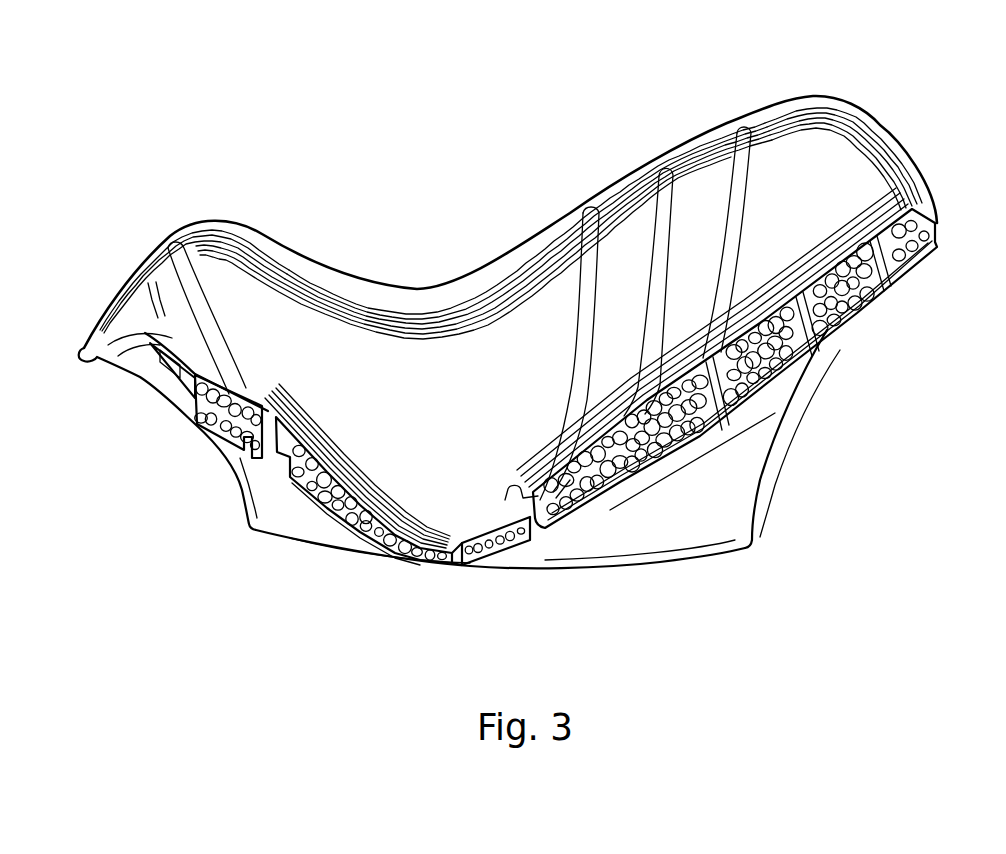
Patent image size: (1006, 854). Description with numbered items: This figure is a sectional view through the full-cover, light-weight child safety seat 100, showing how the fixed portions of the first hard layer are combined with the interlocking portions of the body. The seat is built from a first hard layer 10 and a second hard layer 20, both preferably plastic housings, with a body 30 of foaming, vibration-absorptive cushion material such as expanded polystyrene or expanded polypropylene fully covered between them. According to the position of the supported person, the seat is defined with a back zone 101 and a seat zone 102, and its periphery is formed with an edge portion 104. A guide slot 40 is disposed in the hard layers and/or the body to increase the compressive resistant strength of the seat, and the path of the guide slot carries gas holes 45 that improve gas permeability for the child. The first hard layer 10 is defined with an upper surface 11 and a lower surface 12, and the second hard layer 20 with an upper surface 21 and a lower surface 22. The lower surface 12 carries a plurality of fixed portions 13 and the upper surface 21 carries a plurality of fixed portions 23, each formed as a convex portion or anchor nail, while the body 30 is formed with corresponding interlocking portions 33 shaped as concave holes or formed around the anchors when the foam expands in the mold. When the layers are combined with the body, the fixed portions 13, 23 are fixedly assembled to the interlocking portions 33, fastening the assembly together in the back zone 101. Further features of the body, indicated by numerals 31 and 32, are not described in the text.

The child safety seat 100 is at (458, 165).
The back zone 101 is at (856, 158).
The seat zone 102 is at (158, 318).
The edge portion 104 is at (325, 254).
The guide slot 40 is at (178, 247).
The first hard layer 10 is at (353, 454).
The upper surface of first hard layer 11 is at (421, 536).
The lower surface of first hard layer 12 is at (398, 547).
The fixed portion 13 is at (882, 232).
The second hard layer 20 is at (726, 448).
The upper surface of second hard layer 21 is at (582, 528).
The lower surface of second hard layer 22 is at (595, 518).
The fixed portion 23 is at (887, 282).
The body 30 is at (306, 528).
The cell wall 31 is at (612, 512).
The partition 32 is at (657, 464).
The interlocking portion 33 is at (918, 246).
The gas hole 45 is at (549, 535).